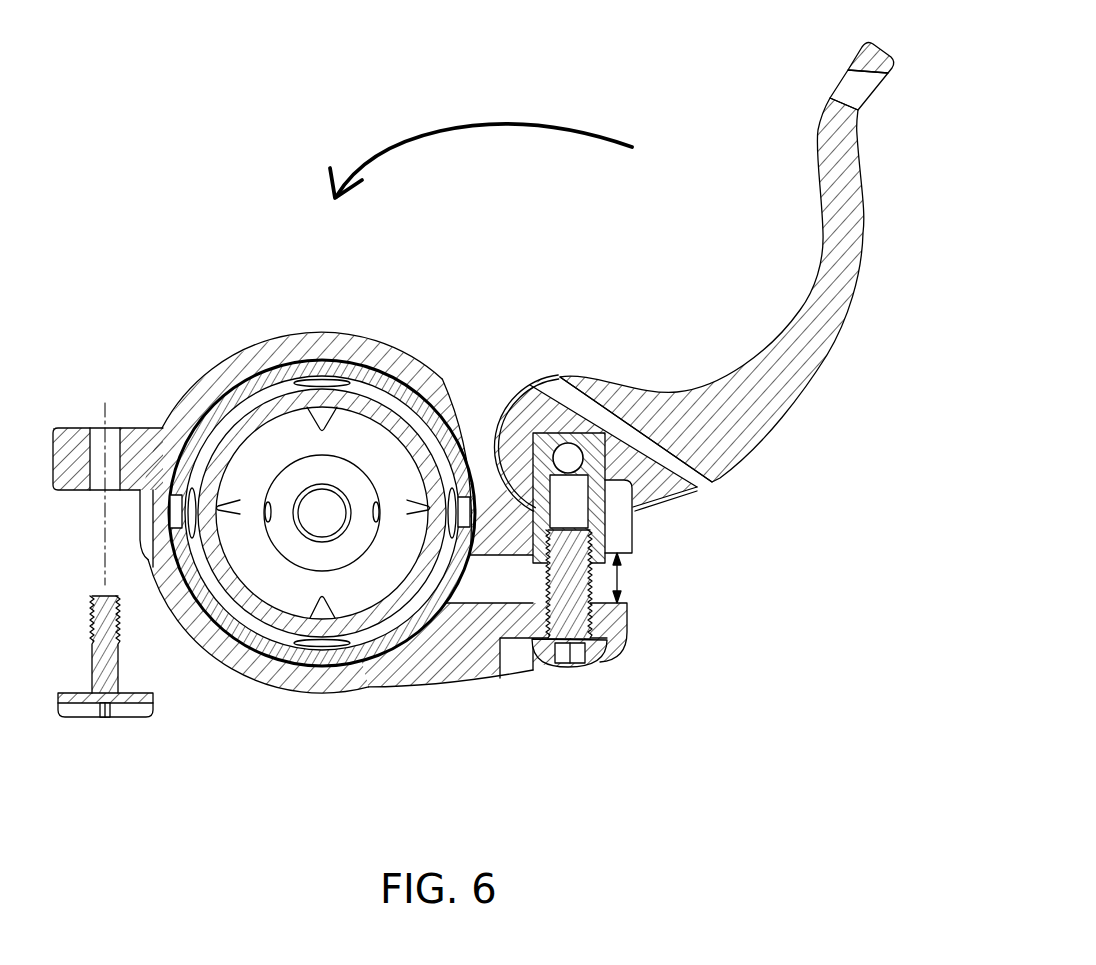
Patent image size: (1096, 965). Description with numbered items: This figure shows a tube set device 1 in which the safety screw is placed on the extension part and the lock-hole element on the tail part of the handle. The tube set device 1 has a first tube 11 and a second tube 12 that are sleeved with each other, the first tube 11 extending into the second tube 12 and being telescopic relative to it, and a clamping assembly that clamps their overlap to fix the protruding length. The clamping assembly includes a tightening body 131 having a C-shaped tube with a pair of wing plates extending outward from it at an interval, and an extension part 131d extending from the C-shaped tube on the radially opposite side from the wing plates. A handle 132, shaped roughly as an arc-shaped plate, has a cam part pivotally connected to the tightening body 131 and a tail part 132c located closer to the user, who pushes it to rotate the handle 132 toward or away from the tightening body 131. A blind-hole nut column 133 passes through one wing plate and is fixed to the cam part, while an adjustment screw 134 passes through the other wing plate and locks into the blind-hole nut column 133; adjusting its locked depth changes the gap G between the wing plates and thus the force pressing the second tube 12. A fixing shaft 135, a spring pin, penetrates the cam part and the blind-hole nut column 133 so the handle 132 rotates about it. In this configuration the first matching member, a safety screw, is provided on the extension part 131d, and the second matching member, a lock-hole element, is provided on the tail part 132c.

The tube set device 1 is at (490, 403).
The first tube 11 is at (356, 348).
The second tube 12 is at (366, 398).
The tightening body 131 is at (453, 672).
The extension part 131d is at (75, 438).
The handle 132 is at (723, 285).
The tail part 132c is at (878, 68).
The blind-hole nut column 133 is at (598, 457).
The adjustment screw 134 is at (597, 648).
The fixing shaft 135 is at (566, 455).
The gap G is at (619, 578).